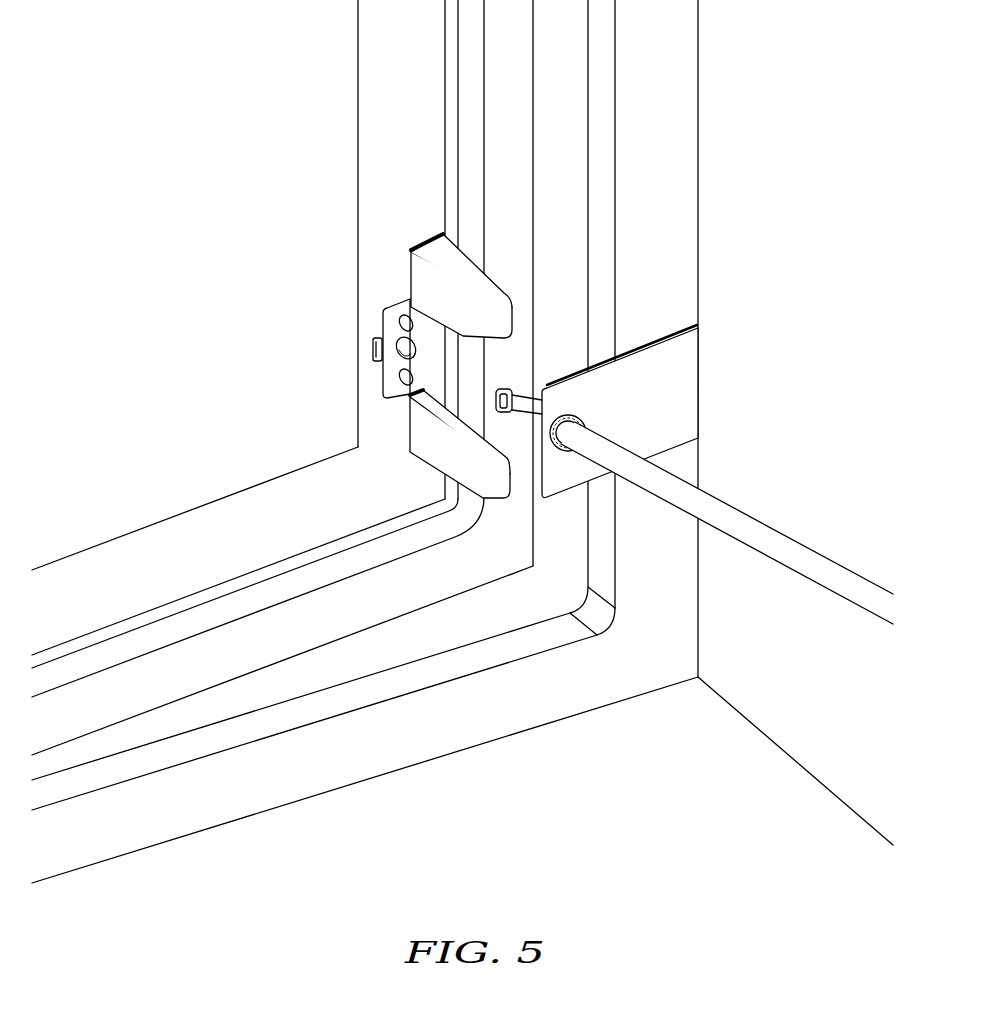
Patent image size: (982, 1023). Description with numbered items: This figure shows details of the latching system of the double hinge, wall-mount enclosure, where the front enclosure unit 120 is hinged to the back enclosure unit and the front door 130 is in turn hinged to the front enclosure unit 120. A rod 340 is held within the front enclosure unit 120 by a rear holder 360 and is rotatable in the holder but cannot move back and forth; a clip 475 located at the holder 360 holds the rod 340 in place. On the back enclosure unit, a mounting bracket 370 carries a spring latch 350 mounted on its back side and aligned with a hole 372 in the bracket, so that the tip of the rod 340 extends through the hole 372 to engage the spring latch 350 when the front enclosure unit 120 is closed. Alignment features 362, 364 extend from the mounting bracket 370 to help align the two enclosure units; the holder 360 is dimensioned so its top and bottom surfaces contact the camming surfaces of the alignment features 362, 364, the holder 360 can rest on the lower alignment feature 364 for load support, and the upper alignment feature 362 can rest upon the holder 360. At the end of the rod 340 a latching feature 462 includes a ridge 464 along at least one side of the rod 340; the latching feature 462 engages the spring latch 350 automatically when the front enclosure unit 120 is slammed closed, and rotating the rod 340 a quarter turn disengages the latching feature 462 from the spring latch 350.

The front enclosure unit 120 is at (787, 713).
The front door 130 is at (197, 532).
The rod 340 is at (760, 538).
The spring latch 350 is at (378, 346).
The rear holder 360 is at (668, 395).
The alignment feature 362 is at (418, 267).
The alignment feature 364 is at (427, 432).
The mounting bracket 370 is at (391, 322).
The hole 372 is at (400, 355).
The latching feature 462 is at (517, 390).
The ridge 464 is at (503, 388).
The clip 475 is at (560, 447).